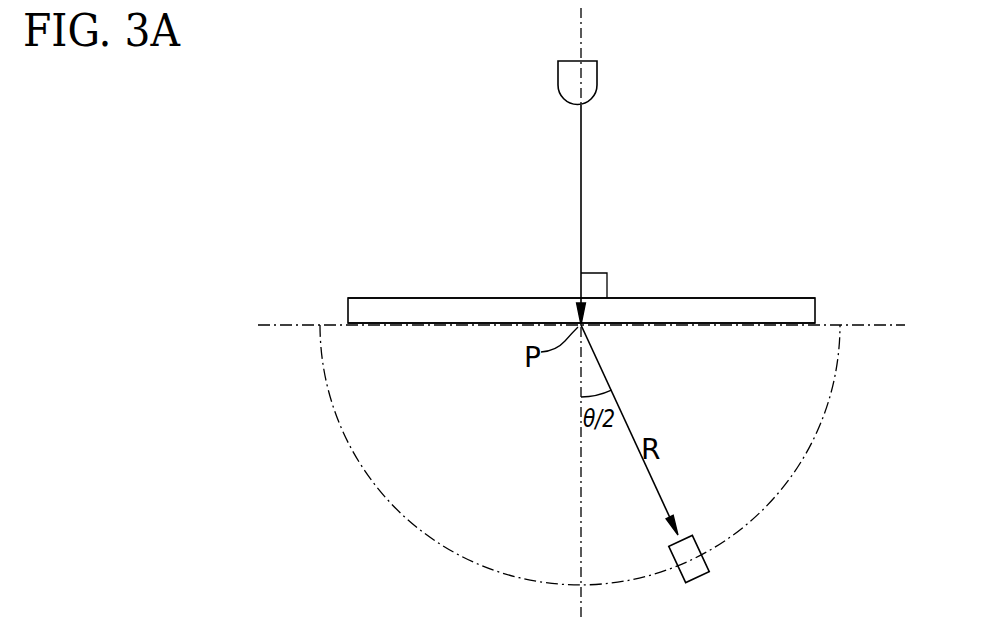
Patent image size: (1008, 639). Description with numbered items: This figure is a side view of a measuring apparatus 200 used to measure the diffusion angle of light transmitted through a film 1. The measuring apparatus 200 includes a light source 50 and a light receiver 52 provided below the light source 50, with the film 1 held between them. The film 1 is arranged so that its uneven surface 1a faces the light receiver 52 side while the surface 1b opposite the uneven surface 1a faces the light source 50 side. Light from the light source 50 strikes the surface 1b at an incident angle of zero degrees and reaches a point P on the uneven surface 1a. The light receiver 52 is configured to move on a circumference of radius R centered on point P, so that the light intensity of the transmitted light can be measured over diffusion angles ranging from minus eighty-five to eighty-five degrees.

The measuring apparatus 200 is at (830, 110).
The light source 50 is at (599, 78).
The film 1 is at (457, 297).
The surface opposite the uneven surface 1b is at (712, 297).
The uneven surface 1a is at (710, 327).
The light receiver 52 is at (708, 562).